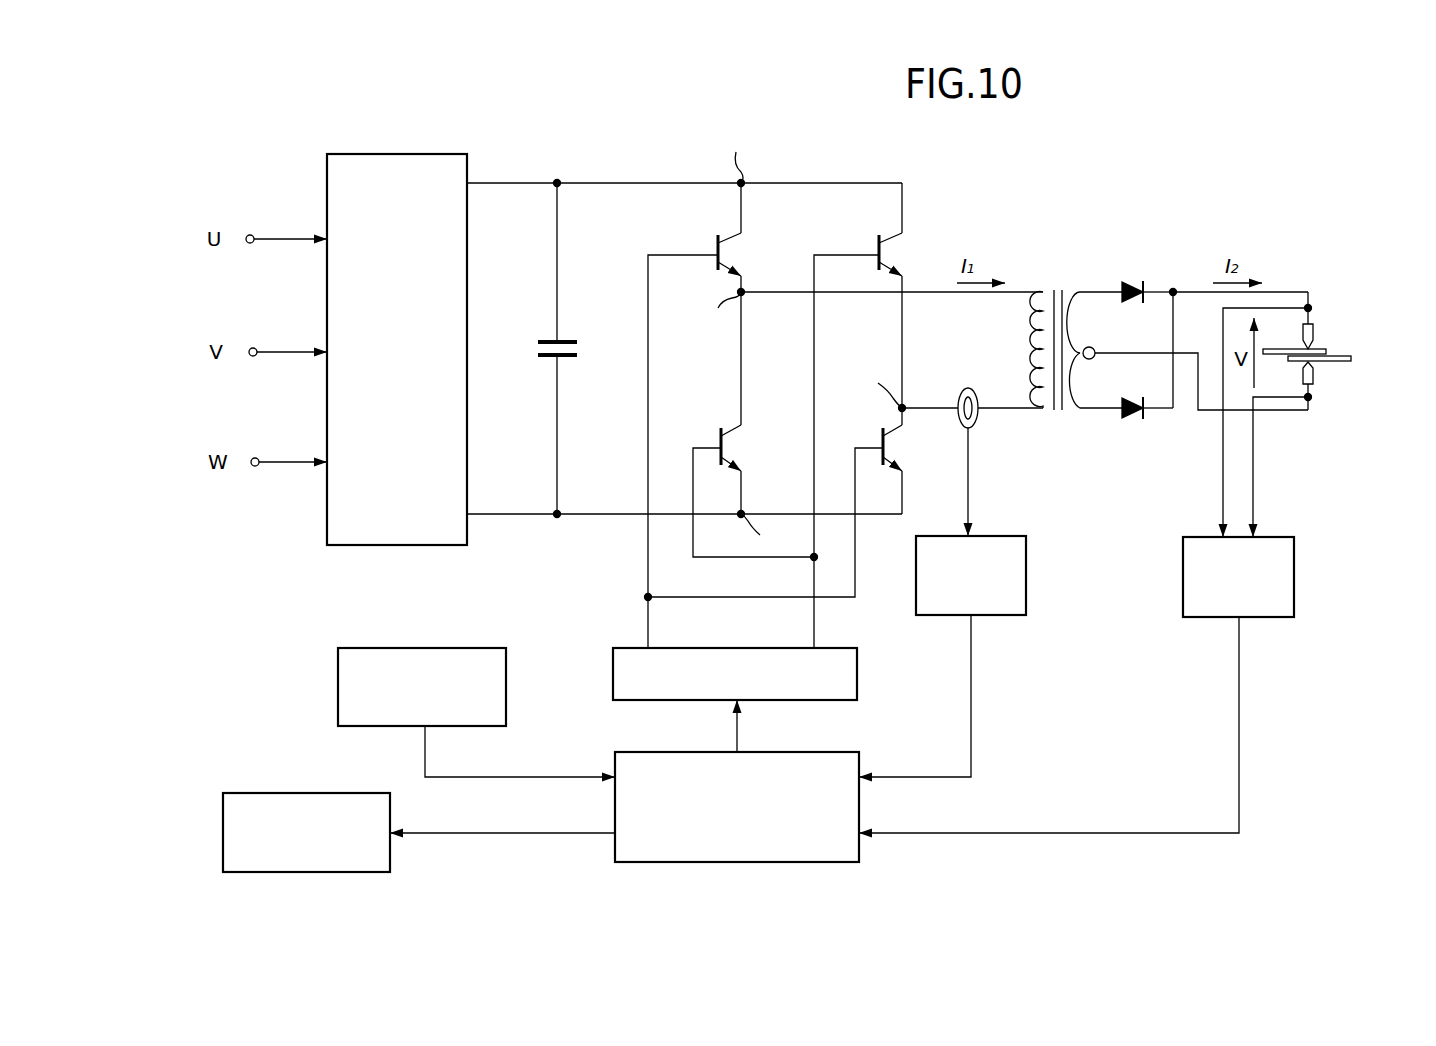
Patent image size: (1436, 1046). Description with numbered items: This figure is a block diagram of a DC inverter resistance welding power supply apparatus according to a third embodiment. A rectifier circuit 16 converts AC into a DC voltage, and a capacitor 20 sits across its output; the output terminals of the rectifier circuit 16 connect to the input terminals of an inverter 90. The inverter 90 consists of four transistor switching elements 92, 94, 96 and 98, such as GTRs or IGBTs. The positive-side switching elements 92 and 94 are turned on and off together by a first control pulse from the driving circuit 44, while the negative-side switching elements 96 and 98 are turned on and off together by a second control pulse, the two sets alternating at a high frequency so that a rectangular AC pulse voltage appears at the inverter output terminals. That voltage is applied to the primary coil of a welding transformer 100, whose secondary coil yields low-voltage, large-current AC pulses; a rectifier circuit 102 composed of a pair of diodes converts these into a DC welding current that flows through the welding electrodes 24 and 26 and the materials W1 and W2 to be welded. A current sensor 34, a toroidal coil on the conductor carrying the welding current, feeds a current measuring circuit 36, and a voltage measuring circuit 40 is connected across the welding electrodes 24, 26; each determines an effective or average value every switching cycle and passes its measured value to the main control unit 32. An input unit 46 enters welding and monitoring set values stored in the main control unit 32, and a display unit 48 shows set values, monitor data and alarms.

The rectifier circuit 16 is at (327, 183).
The capacitor 20 is at (583, 348).
The inverter 90 is at (836, 210).
The transistor switching element 92 is at (735, 247).
The transistor switching element 94 is at (904, 452).
The transistor switching element 96 is at (900, 255).
The transistor switching element 98 is at (742, 446).
The welding transformer 100 is at (1056, 285).
The rectifier circuit 102 is at (1148, 312).
The welding electrode 24 is at (1314, 334).
The welding electrode 26 is at (1316, 381).
The material to be welded W1 is at (1327, 350).
The material to be welded W2 is at (1340, 362).
The current sensor 34 is at (984, 420).
The current measuring circuit 36 is at (1027, 558).
The voltage measuring circuit 40 is at (1295, 549).
The driving circuit 44 is at (621, 648).
The main control unit 32 is at (845, 752).
The input unit 46 is at (338, 675).
The display unit 48 is at (262, 793).